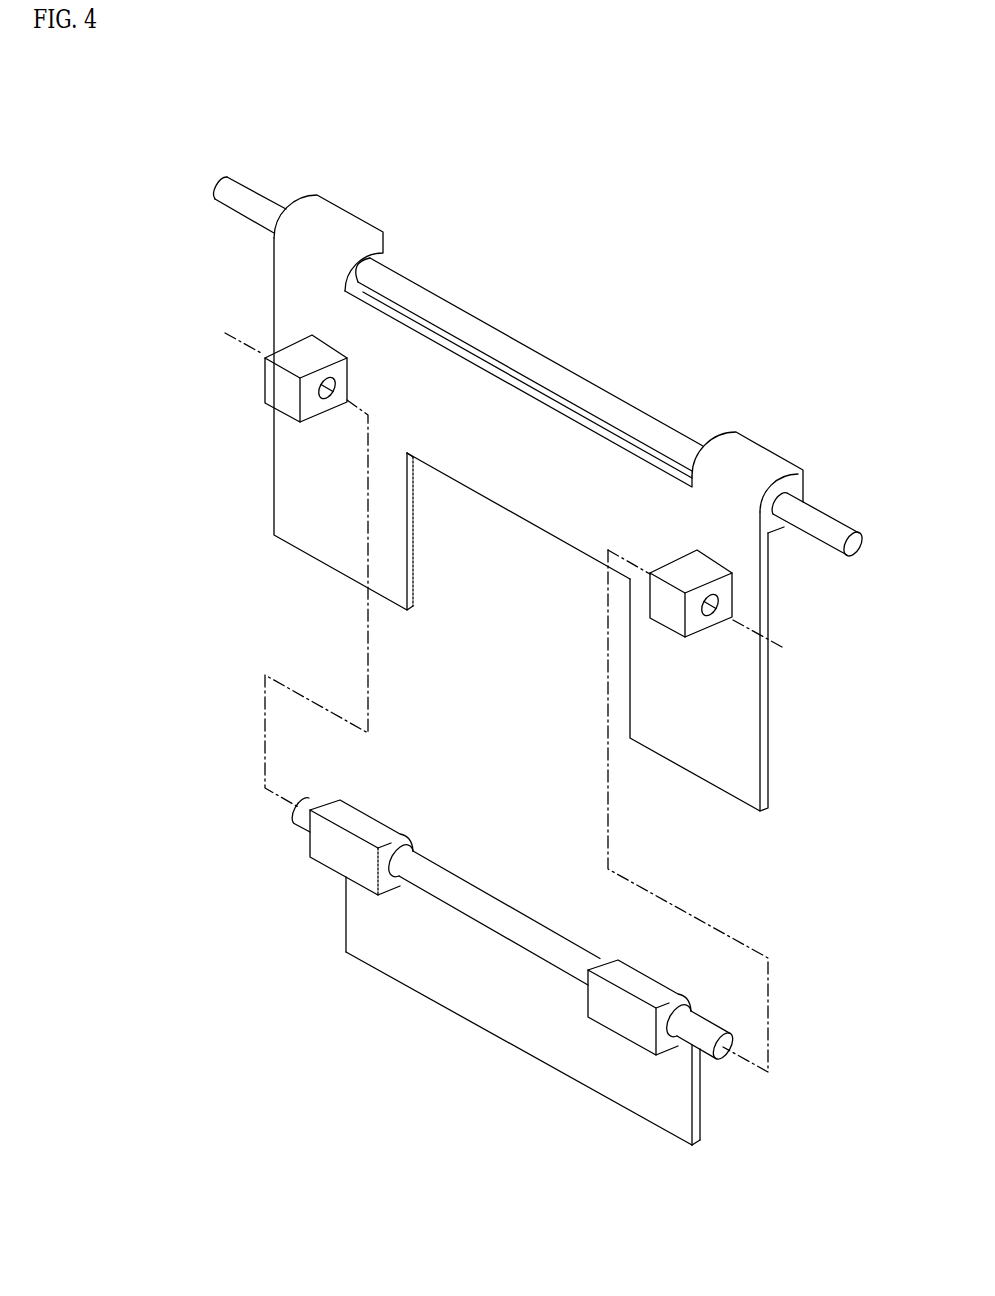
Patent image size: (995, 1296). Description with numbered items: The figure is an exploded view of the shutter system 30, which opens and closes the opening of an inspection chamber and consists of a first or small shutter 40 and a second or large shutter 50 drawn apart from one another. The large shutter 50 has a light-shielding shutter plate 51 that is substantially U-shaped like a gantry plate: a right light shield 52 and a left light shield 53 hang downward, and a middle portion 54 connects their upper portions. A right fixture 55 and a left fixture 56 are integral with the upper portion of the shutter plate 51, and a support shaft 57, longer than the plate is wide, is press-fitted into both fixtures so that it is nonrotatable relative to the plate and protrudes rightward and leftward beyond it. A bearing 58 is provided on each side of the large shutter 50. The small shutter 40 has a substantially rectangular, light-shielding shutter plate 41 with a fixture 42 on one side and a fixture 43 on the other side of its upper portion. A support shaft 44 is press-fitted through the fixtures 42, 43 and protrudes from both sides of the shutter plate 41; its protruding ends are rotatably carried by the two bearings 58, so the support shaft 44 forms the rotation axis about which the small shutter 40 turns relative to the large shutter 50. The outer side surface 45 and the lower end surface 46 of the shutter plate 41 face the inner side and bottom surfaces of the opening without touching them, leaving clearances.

The shutter system 30 is at (188, 85).
The second shutter 50 is at (173, 567).
The first shutter 40 is at (178, 742).
The shutter plate 51 is at (565, 395).
The right light shield 52 is at (693, 774).
The left light shield 53 is at (315, 558).
The middle portion 54 is at (505, 509).
The right fixture 55 is at (779, 455).
The left fixture 56 is at (360, 218).
The support shaft 57 is at (472, 316).
The bearing 58 is at (281, 353).
The shutter plate 41 is at (515, 1062).
The fixture 42 is at (640, 982).
The fixture 43 is at (353, 820).
The support shaft 44 is at (472, 888).
The outer side surface 45 is at (345, 932).
The lower end surface 46 is at (693, 1148).